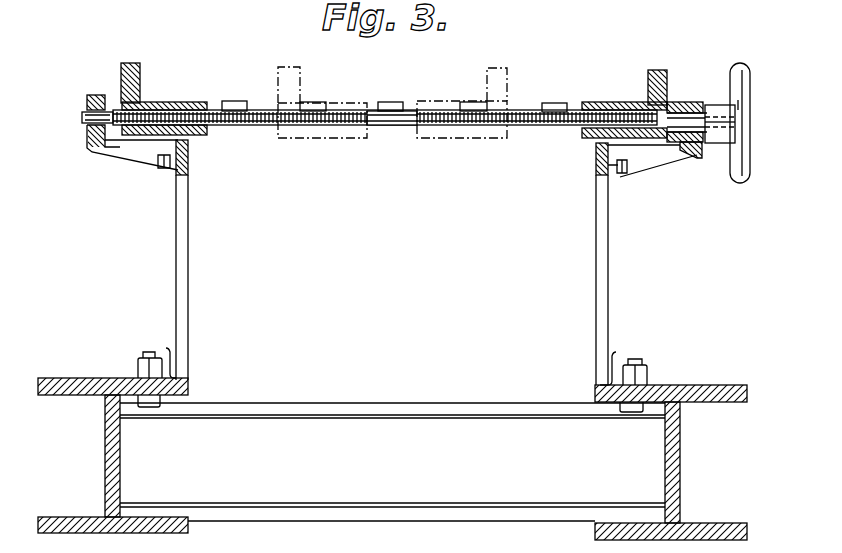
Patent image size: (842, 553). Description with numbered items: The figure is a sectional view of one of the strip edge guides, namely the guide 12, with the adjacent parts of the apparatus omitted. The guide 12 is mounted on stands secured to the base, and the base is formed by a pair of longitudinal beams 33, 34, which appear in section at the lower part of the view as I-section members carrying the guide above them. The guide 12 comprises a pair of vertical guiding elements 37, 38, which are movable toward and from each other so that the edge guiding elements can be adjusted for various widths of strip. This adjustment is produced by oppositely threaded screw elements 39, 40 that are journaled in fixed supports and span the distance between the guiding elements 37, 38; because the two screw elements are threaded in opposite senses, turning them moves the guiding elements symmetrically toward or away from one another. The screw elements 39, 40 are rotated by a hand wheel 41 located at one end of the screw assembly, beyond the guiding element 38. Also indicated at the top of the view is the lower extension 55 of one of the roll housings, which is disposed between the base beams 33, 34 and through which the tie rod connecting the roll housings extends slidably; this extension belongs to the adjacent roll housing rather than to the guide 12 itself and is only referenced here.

The strip edge guide 12 is at (573, 84).
The longitudinal beam 33 is at (110, 462).
The longitudinal beam 34 is at (673, 463).
The vertical guiding element 37 is at (122, 66).
The vertical guiding element 38 is at (663, 82).
The threaded screw element 39 is at (330, 112).
The threaded screw element 40 is at (433, 115).
The hand wheel 41 is at (747, 133).
The lower extension 55 is at (205, 0).